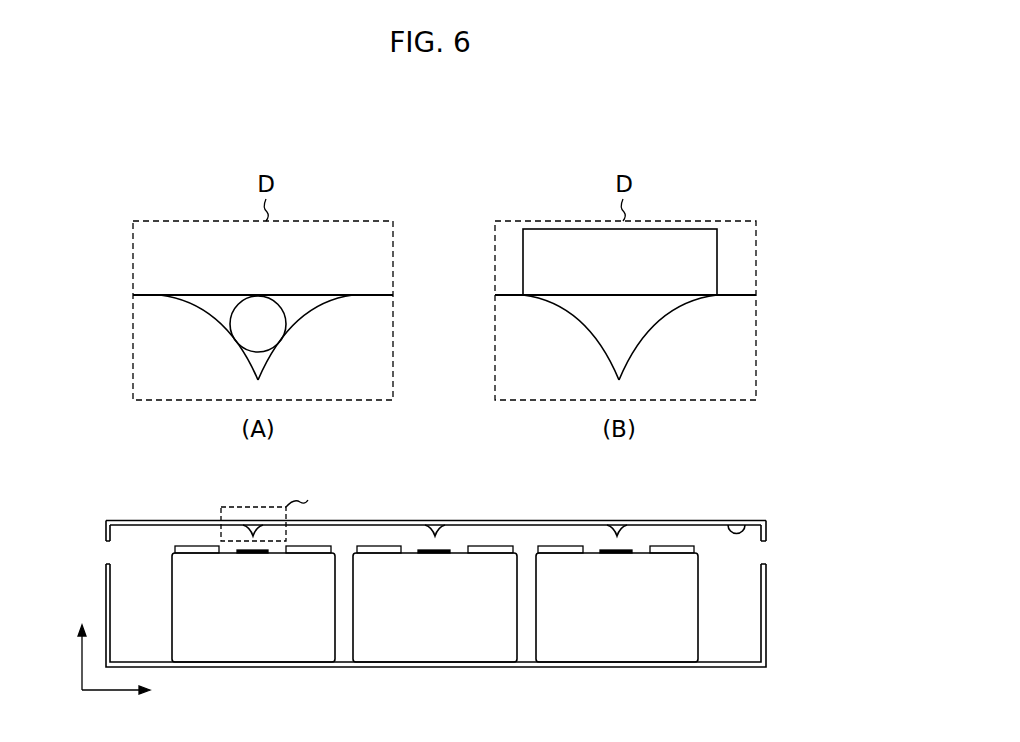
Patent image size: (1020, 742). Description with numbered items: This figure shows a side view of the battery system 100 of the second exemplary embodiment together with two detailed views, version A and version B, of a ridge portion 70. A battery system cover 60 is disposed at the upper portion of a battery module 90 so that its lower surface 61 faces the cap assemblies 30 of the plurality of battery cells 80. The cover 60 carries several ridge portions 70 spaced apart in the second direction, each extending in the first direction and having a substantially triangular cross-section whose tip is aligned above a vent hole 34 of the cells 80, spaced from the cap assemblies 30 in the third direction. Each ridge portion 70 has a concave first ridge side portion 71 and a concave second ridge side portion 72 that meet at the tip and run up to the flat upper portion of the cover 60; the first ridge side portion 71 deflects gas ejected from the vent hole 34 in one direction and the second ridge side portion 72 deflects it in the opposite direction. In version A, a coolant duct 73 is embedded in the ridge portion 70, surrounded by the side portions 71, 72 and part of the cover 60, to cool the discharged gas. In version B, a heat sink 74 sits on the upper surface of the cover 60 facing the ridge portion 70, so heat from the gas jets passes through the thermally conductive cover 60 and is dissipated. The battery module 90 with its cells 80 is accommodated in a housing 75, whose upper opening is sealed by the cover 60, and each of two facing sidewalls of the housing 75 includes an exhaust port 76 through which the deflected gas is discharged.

The battery system 100 is at (692, 162).
The battery system cover 60 is at (197, 293).
The lower surface 61 is at (741, 526).
The ridge portion 70 is at (438, 391).
The first ridge side portion 71 is at (300, 326).
The second ridge side portion 72 is at (220, 326).
The coolant duct 73 is at (245, 336).
The heat sink 74 is at (606, 274).
The housing 75 is at (764, 603).
The exhaust port 76 is at (105, 551).
The battery cell 80 is at (700, 602).
The battery module 90 is at (253, 652).
The cap assembly 30 is at (588, 549).
The vent hole 34 is at (447, 550).